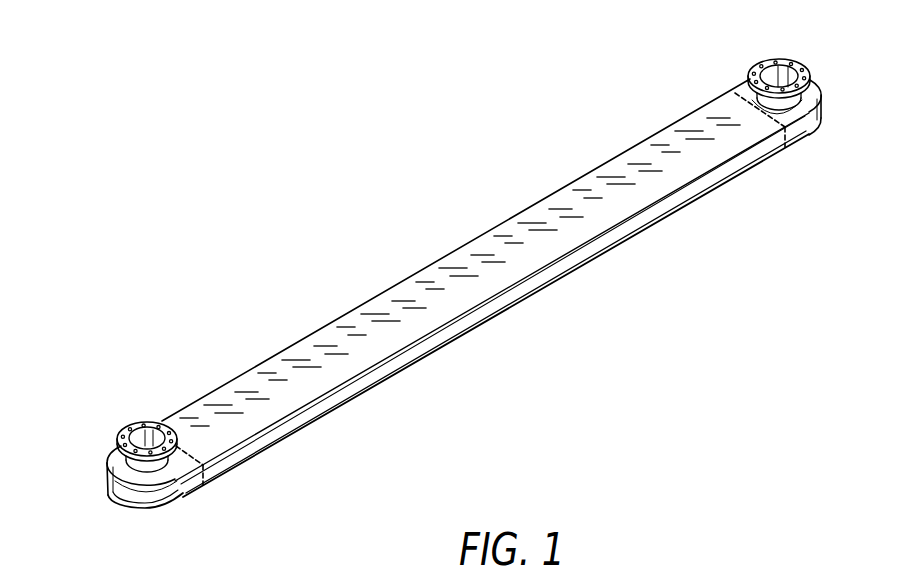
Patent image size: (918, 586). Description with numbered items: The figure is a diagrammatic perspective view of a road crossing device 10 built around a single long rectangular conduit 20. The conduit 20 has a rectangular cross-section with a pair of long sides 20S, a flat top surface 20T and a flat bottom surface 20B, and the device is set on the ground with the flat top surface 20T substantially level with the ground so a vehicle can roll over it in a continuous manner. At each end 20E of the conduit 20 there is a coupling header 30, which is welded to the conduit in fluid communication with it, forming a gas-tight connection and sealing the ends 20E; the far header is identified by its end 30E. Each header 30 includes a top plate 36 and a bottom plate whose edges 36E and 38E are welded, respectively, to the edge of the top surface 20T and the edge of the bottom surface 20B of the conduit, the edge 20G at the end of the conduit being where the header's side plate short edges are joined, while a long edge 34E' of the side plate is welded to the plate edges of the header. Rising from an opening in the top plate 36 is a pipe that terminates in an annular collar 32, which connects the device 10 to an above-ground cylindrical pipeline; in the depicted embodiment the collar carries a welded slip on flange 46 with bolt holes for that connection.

The road crossing device 10 is at (325, 182).
The rectangular conduit 20 is at (527, 210).
The flat top surface 20T is at (228, 397).
The long sides 20S is at (278, 435).
The flat bottom surface 20B is at (490, 322).
The edge 20G is at (735, 94).
The end 20E is at (819, 128).
The coupling header 30 is at (150, 468).
The end of coupling header 30E is at (757, 63).
The annular collar 32 is at (145, 425).
The long edge of side plate 34E' is at (233, 481).
The top plate 36 is at (108, 455).
The edge of top plate 36E is at (107, 467).
The edge of bottom plate 38E is at (143, 506).
The welded slip on flange 46 is at (782, 74).